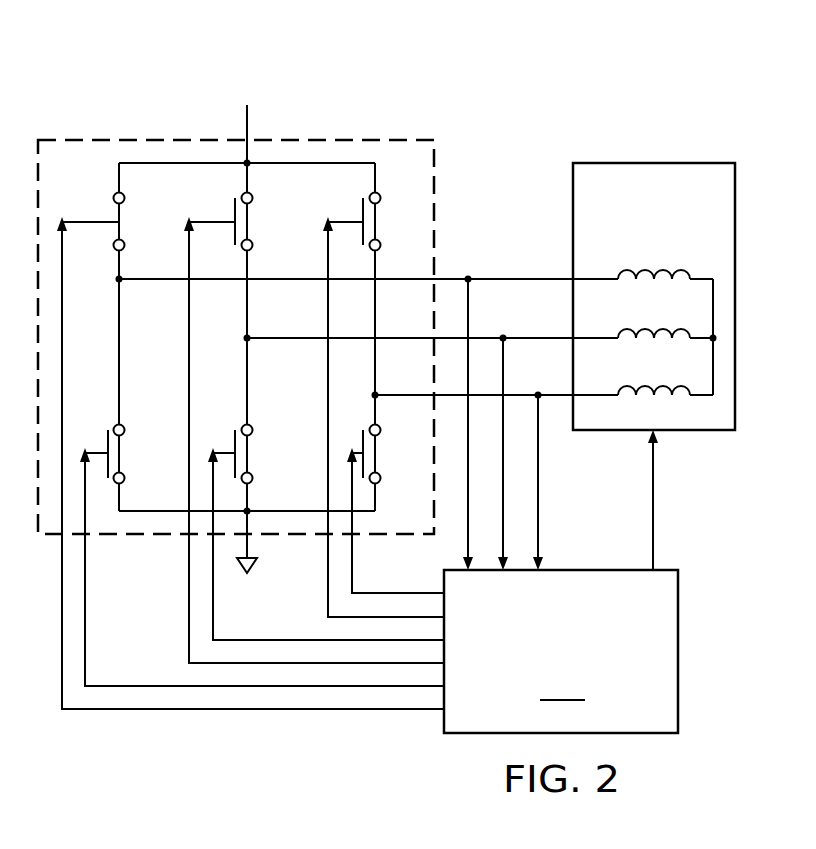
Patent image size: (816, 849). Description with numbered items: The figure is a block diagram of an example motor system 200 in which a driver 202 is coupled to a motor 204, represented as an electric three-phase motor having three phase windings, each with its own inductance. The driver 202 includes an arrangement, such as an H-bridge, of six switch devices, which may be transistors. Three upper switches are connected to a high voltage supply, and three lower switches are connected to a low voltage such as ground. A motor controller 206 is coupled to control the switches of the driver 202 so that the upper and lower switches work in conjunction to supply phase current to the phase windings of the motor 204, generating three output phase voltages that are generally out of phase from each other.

The motor system 200 is at (513, 86).
The driver 202 is at (148, 135).
The motor 204 is at (666, 163).
The motor controller 206 is at (561, 651).